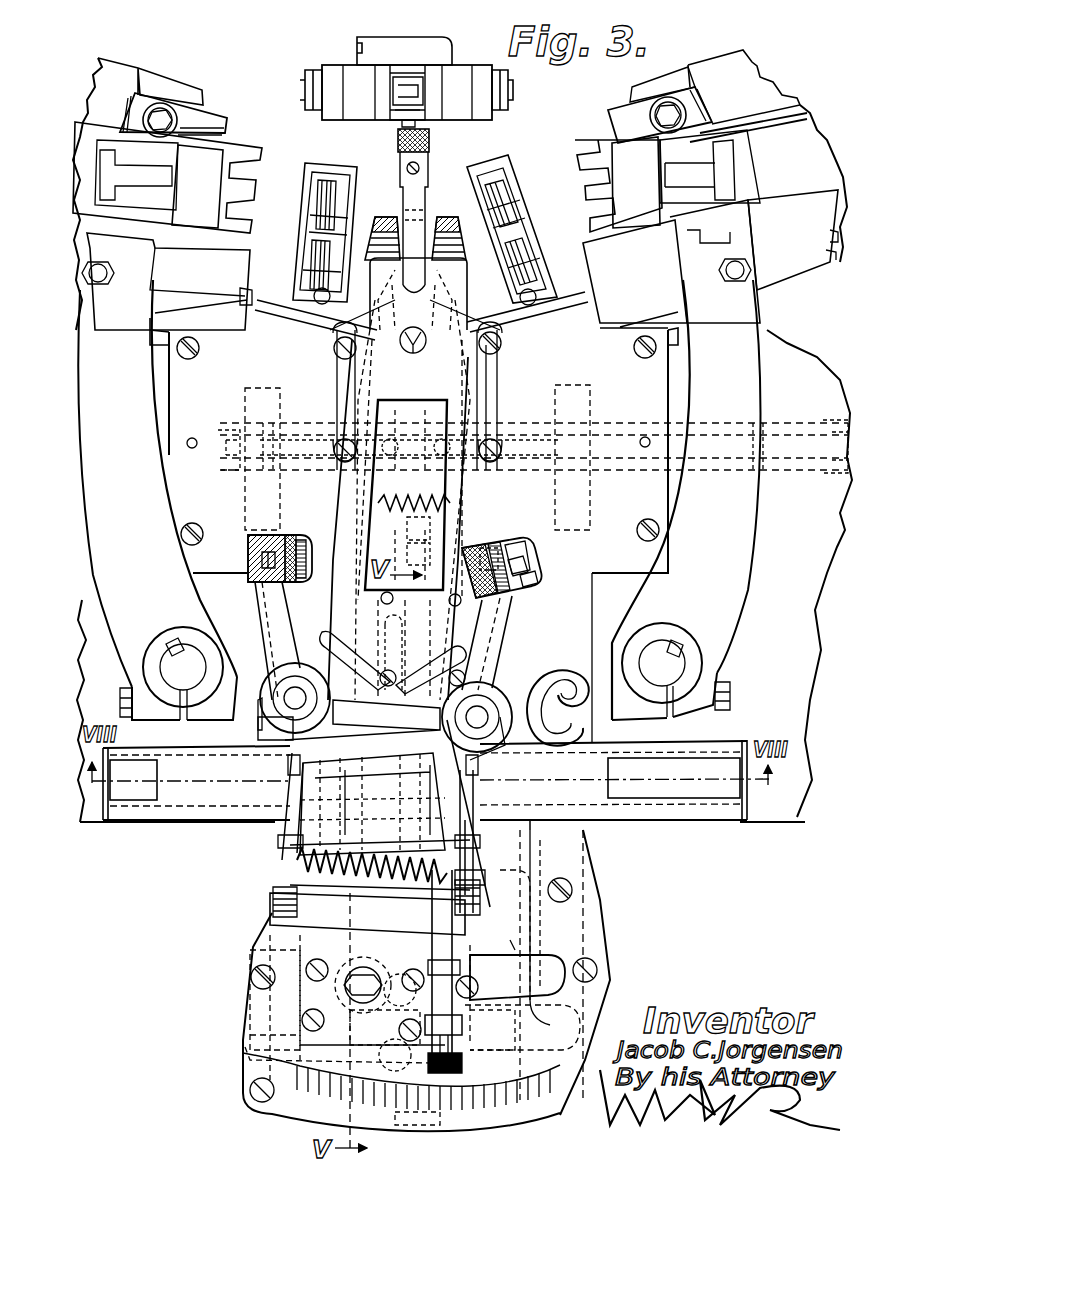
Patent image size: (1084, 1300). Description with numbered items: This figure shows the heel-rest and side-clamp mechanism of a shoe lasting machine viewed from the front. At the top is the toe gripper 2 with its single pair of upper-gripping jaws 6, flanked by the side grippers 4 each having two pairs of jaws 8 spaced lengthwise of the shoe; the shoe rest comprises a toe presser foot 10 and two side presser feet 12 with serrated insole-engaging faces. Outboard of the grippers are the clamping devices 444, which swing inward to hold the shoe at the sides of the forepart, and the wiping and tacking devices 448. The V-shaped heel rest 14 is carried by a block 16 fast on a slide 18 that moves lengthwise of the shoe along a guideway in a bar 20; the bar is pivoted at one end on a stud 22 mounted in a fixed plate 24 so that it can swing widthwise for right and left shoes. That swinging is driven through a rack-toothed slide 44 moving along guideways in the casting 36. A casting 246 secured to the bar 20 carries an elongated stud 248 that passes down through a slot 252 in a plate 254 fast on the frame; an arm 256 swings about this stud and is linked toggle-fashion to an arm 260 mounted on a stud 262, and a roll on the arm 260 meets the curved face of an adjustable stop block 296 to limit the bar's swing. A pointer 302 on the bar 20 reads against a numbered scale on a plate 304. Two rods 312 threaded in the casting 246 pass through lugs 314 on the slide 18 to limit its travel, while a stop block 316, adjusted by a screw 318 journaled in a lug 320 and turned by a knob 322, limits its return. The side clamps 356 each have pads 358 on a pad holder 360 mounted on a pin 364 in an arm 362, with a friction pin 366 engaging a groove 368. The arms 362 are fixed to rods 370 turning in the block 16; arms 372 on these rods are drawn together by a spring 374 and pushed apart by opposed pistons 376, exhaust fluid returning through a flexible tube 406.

The toe gripper 2 is at (462, 62).
The side grippers 4 is at (302, 172).
The upper-gripping jaws 6 is at (410, 105).
The pairs of jaws 8 is at (325, 207).
The toe presser foot 10 is at (430, 146).
The side presser feet 12 is at (388, 228).
The heel rest 14 is at (500, 672).
The block 16 is at (440, 828).
The slide 18 is at (345, 620).
The bar 20 is at (345, 535).
The stud 22 is at (432, 333).
The fixed plate 24 is at (478, 393).
The casting 36 is at (160, 814).
The slide 44 is at (197, 795).
The casting 246 is at (278, 930).
The elongated stud 248 is at (360, 975).
The slot 252 is at (514, 935).
The plate 254 is at (530, 897).
The arm 256 is at (395, 980).
The arm 260 is at (485, 1000).
The stud 262 is at (488, 970).
The stop block 296 is at (520, 1043).
The pointer 302 is at (373, 1040).
The plate 304 is at (523, 1115).
The rods 312 is at (290, 793).
The lugs 314 is at (290, 840).
The stop block 316 is at (460, 870).
The screw 318 is at (455, 950).
The lug 320 is at (460, 1028).
The knob 322 is at (445, 1075).
The side clamps 356 is at (238, 540).
The shoe-engaging pads 358 is at (330, 565).
The pad holder 360 is at (258, 562).
The arm 362 is at (270, 612).
The pin 364 is at (268, 584).
The friction pin 366 is at (270, 538).
The groove 368 is at (530, 598).
The rods 370 is at (285, 702).
The arms 372 is at (288, 768).
The spring 374 is at (287, 872).
The pistons 376 is at (380, 858).
The flexible tube 406 is at (561, 707).
The clamping devices 444 is at (230, 150).
The wiping and tacking devices 448 is at (215, 108).